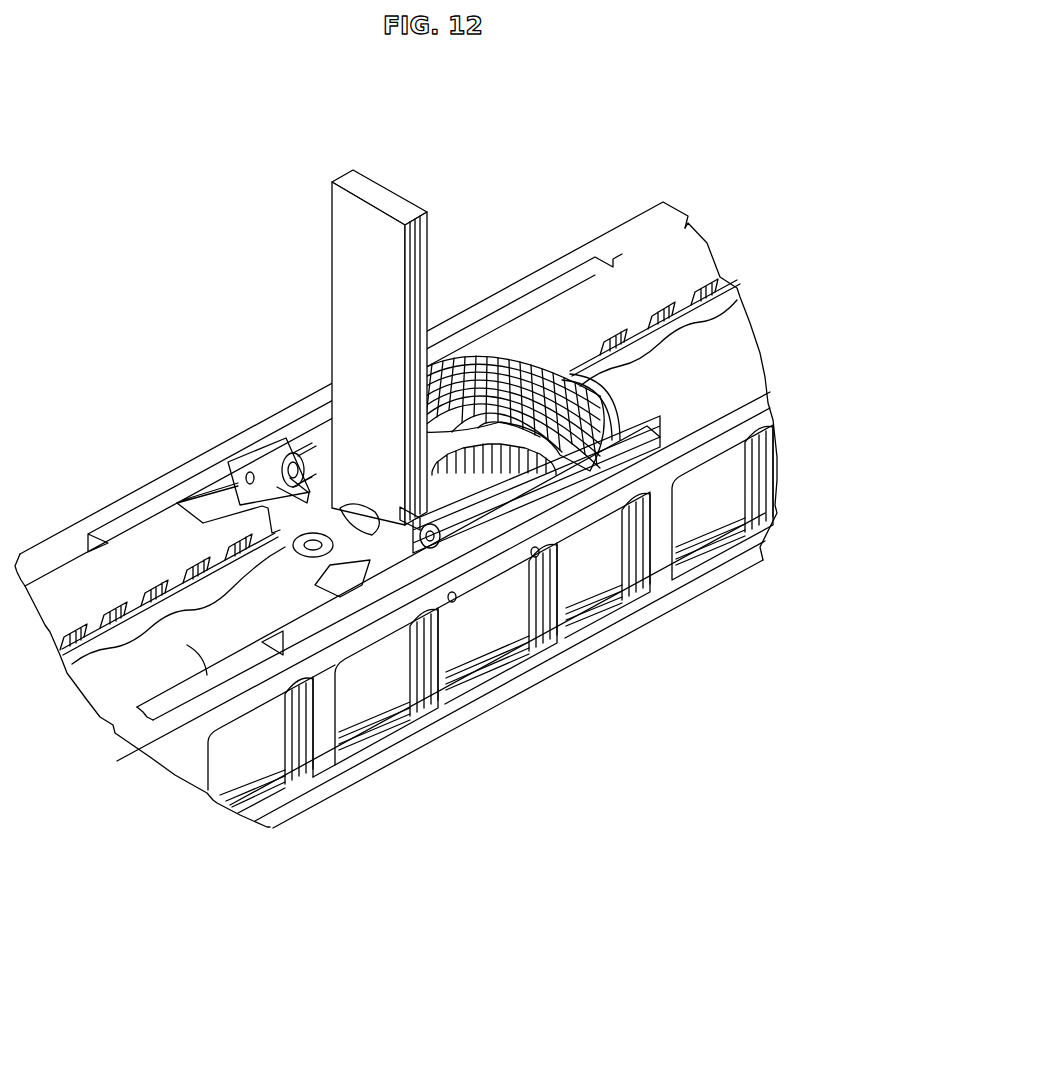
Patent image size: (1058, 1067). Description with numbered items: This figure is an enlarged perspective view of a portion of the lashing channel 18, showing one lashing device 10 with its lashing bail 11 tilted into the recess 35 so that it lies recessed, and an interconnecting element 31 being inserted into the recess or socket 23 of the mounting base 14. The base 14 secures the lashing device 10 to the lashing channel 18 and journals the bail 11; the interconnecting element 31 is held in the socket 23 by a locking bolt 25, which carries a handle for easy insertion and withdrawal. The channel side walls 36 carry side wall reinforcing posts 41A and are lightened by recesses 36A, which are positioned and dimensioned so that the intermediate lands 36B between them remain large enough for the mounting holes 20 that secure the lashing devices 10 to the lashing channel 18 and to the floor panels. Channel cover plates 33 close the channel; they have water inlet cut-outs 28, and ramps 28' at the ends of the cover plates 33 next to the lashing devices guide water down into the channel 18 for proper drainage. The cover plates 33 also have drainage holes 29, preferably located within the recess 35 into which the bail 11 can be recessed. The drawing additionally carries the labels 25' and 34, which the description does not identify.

The lashing device 10 is at (307, 427).
The lashing bail 11 is at (563, 406).
The mounting base 14 is at (270, 477).
The lashing channel 18 is at (573, 192).
The connecting holes 20 is at (537, 558).
The recess or socket 23 is at (322, 542).
The locking bolt 25 is at (433, 694).
The support piece 25' is at (379, 536).
The water inlet cut-outs 28 is at (555, 459).
The ramps 28' is at (267, 521).
The holes 29 is at (483, 473).
The interconnecting element 31 is at (365, 262).
The cover plate 33 is at (657, 268).
The toothed rail 34 is at (698, 290).
The recess 35 is at (603, 420).
The channel side walls 36 is at (605, 242).
The recesses 36A is at (405, 696).
The intermediate lands 36B is at (530, 624).
The side wall reinforcing posts 41A is at (322, 752).